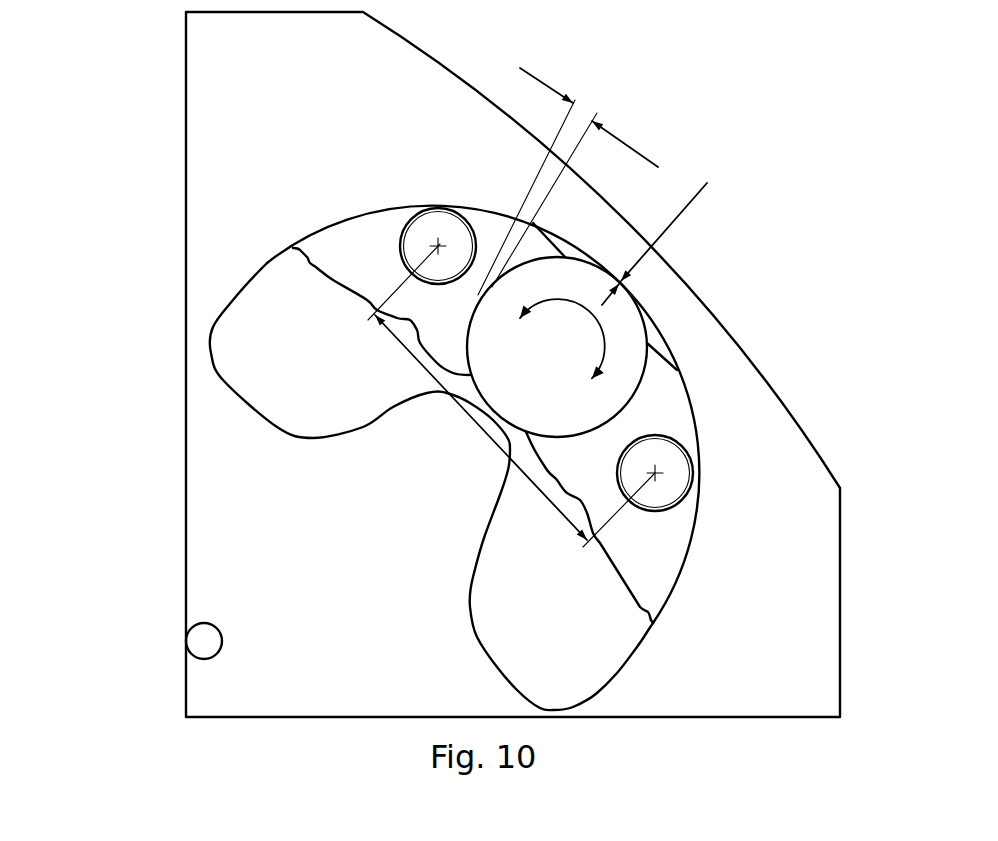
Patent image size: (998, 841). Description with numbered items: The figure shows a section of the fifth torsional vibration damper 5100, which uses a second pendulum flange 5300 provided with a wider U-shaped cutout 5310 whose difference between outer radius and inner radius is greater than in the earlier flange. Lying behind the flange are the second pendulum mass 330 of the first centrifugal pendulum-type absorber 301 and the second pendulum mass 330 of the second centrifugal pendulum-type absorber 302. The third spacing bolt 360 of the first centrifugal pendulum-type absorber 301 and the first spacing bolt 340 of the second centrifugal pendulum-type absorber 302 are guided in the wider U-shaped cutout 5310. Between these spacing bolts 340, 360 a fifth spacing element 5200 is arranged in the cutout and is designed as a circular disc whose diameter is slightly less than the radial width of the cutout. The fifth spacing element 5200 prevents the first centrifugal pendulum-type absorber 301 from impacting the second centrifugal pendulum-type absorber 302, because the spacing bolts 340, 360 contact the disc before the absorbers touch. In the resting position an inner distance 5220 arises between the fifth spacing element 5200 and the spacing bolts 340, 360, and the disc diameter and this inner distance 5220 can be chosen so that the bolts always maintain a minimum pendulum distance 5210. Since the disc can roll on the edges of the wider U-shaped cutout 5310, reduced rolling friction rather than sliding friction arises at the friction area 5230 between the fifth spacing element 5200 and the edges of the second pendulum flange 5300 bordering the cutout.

The fifth torsional vibration damper 5100 is at (910, 143).
The second pendulum flange 5300 is at (743, 700).
The fifth spacing element 5200 is at (627, 342).
The wider U-shaped cutout 5310 is at (552, 690).
The pendulum distance 5210 is at (475, 423).
The inner distance 5220 is at (584, 110).
The friction area 5230 is at (627, 280).
The first centrifugal pendulum-type absorber 301 is at (330, 247).
The second centrifugal pendulum-type absorber 302 is at (670, 550).
The second pendulum mass 330 is at (498, 366).
The first spacing bolt 340 is at (677, 468).
The third spacing bolt 360 is at (441, 220).